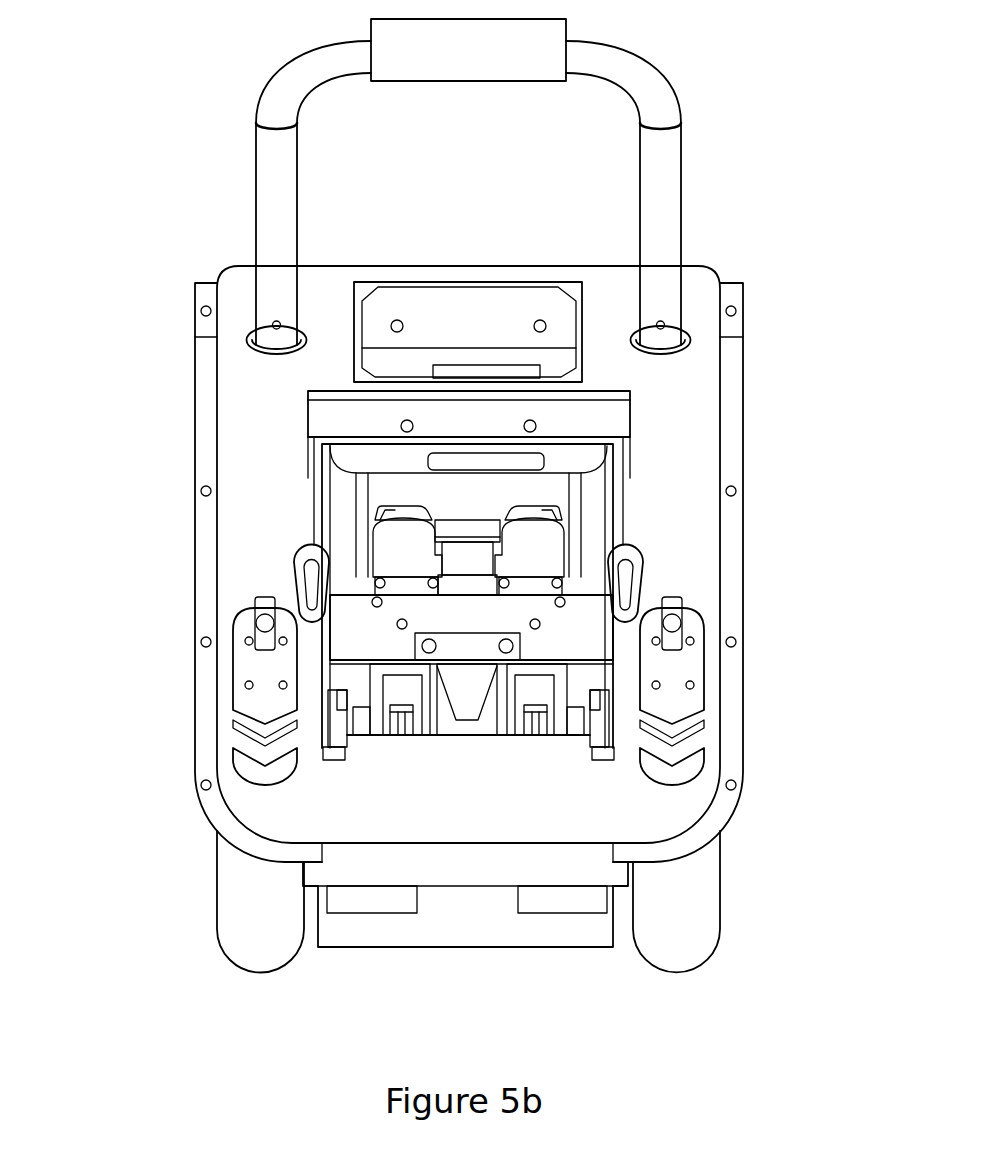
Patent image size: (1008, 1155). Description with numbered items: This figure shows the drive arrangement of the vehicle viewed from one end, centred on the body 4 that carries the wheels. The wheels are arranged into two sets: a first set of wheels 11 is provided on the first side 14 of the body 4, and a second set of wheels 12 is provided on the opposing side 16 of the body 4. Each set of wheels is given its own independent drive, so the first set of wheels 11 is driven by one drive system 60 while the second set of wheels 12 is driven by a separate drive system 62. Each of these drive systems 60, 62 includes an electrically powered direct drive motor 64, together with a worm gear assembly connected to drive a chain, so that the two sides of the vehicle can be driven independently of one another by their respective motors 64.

The body 4 is at (682, 438).
The first set of wheels 11 is at (695, 915).
The second set of wheels 12 is at (236, 907).
The first side 14 is at (745, 590).
The opposing side 16 is at (193, 625).
The drive system 60 is at (558, 673).
The drive system 62 is at (370, 693).
The electrically powered direct drive motor 64 is at (397, 545).